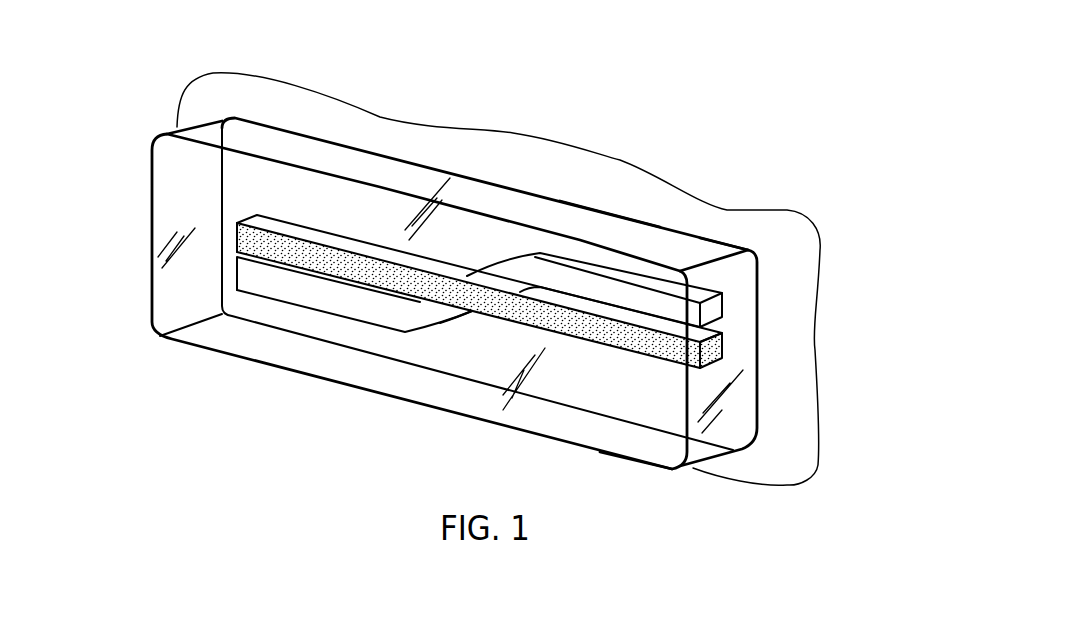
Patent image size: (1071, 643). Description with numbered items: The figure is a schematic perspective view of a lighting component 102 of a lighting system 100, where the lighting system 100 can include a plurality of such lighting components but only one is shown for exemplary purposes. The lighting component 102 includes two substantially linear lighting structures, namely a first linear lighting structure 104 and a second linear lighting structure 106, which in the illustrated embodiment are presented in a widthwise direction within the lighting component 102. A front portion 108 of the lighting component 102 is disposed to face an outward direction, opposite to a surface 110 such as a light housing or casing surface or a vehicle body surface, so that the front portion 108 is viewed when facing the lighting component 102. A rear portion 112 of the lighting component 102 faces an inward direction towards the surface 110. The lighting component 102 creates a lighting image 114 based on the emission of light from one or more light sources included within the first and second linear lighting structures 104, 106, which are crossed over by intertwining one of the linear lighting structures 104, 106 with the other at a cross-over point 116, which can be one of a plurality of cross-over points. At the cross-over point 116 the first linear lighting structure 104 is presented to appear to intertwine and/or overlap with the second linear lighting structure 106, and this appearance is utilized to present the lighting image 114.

The lighting system 100 is at (657, 45).
The lighting component 102 is at (160, 128).
The first substantially linear lighting structure 104 is at (238, 235).
The second substantially linear lighting structure 106 is at (258, 288).
The front portion 108 is at (672, 455).
The surface 110 is at (620, 180).
The rear portion 112 is at (727, 240).
The lighting image 114 is at (367, 221).
The cross-over point 116 is at (468, 329).